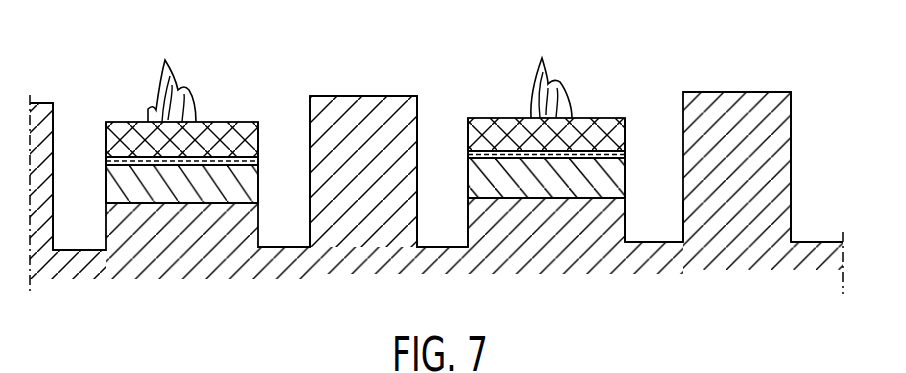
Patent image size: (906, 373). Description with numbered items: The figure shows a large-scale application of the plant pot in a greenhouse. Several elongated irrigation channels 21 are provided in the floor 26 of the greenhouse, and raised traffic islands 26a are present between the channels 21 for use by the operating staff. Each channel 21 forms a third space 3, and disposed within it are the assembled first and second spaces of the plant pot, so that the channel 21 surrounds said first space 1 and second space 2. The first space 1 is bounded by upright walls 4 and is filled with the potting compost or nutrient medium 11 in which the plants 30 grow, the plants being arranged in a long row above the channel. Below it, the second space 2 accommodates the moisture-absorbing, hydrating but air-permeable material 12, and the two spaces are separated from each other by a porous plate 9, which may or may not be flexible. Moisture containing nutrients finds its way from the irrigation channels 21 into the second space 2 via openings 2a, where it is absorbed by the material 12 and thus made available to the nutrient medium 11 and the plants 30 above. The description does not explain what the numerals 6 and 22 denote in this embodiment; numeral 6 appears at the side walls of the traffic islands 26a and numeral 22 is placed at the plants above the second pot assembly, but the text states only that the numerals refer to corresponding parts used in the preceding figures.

The first space 1 is at (226, 138).
The second space 2 is at (217, 183).
The openings 2a is at (103, 196).
The third space 3 is at (85, 232).
The upright walls 4 is at (248, 155).
The rib side wall 6 is at (310, 163).
The porous plate 9 is at (586, 114).
The potting compost 11 is at (117, 122).
The moisture-absorbing material 12 is at (165, 185).
The irrigation channels 21 is at (440, 202).
The flame 22 is at (538, 80).
The floor 26 is at (436, 210).
The traffic islands 26a is at (350, 94).
The plants 30 is at (162, 88).